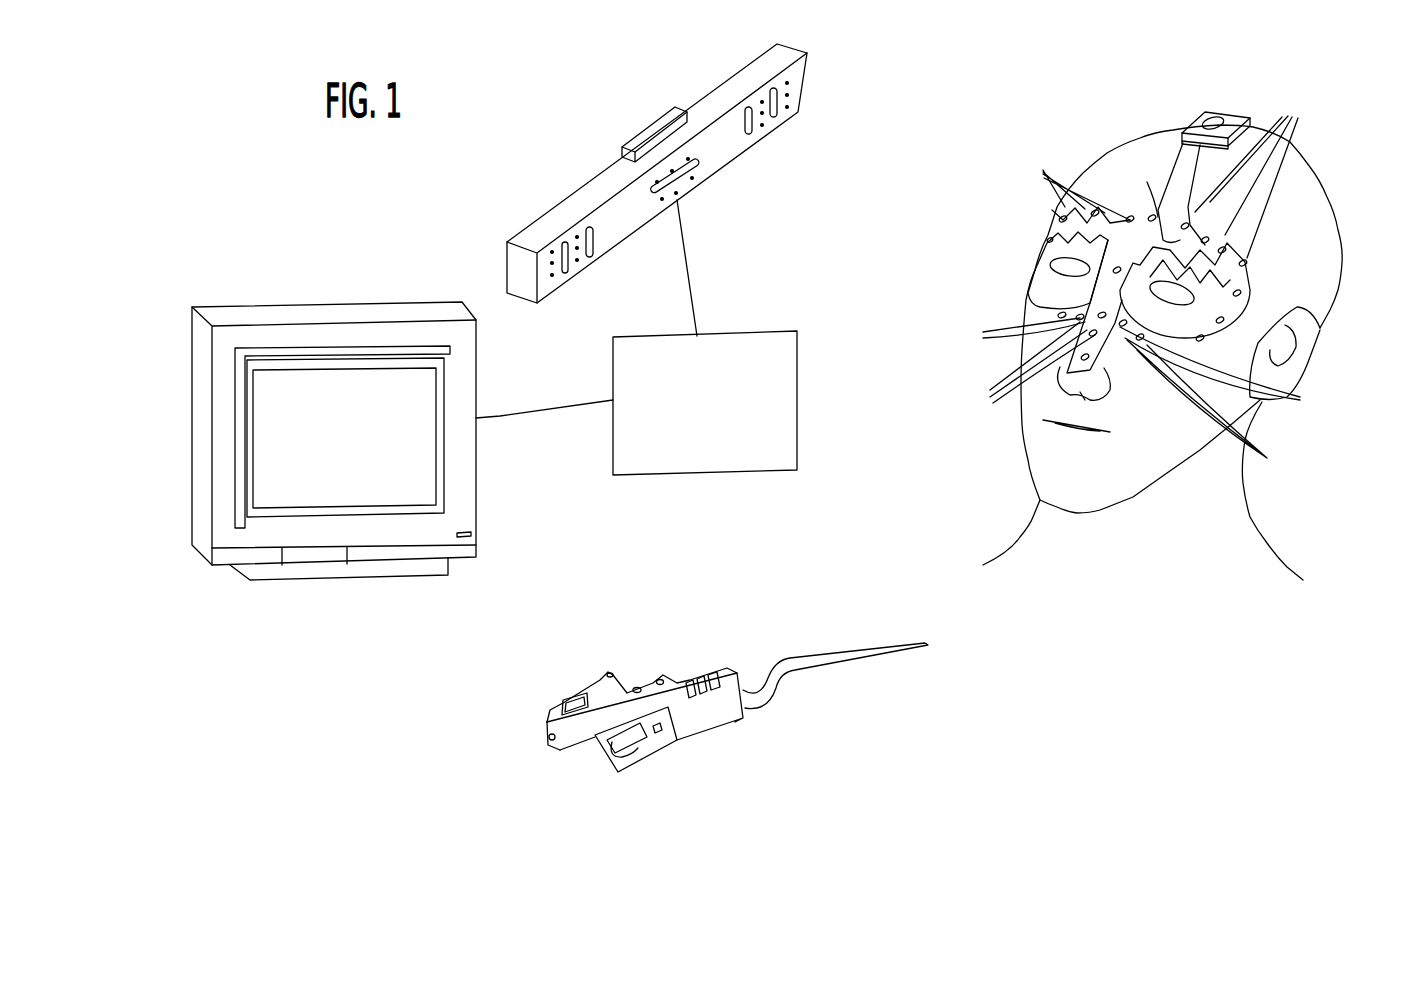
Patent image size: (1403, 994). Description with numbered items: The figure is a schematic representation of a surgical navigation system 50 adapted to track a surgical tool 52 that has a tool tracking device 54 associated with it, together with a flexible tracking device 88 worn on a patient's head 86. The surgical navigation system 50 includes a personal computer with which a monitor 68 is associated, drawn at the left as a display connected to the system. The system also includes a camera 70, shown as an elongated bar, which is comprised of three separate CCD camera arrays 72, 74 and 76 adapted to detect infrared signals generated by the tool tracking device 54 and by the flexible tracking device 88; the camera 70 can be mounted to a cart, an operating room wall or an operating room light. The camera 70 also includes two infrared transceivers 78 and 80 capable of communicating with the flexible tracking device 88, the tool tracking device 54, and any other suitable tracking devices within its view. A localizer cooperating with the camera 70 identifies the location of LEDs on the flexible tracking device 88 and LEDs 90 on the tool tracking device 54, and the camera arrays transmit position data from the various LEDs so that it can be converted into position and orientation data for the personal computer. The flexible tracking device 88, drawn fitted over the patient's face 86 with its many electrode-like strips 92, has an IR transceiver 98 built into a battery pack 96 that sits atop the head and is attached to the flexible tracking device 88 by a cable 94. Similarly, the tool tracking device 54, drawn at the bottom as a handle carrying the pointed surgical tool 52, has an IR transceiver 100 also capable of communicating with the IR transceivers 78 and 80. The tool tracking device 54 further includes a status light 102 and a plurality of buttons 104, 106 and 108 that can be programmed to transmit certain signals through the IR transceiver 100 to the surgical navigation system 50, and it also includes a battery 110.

The surgical navigation system 50 is at (770, 331).
The surgical tool 52 is at (858, 657).
The tool tracking device 54 is at (582, 748).
The monitor 68 is at (308, 300).
The camera 70 is at (717, 86).
The CCD camera array 72 is at (562, 242).
The CCD camera array 74 is at (650, 195).
The CCD camera array 76 is at (774, 119).
The infrared transceiver 78 is at (590, 258).
The infrared transceiver 80 is at (750, 134).
The patient head 86 is at (1330, 310).
The flexible tracking device 88 is at (1253, 267).
The LEDs 90 is at (1286, 116).
The markers 92 is at (545, 729).
The cable 94 is at (1147, 182).
The battery pack 96 is at (1250, 118).
The IR transceiver 98 is at (1206, 112).
The IR transceiver 100 is at (573, 697).
The status light 102 is at (639, 687).
The button 104 is at (691, 688).
The button 106 is at (705, 683).
The button 108 is at (718, 678).
The battery 110 is at (637, 746).